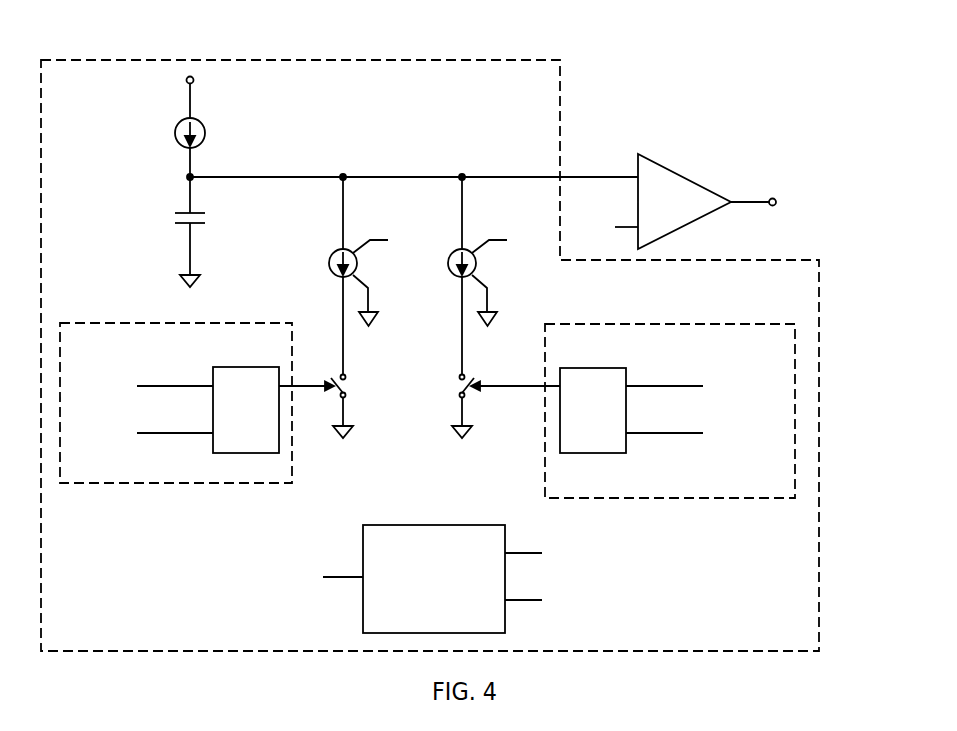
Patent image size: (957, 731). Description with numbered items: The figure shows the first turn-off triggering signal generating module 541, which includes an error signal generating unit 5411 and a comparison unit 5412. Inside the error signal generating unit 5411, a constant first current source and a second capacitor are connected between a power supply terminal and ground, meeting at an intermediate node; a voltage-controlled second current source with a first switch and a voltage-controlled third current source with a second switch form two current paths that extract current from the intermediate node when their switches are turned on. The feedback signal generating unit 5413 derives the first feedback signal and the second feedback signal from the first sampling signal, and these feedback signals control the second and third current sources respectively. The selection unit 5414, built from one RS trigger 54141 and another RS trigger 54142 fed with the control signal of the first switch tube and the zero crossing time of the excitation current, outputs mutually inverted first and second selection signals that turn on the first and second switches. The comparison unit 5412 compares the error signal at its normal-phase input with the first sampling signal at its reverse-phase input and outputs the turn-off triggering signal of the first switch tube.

The first turn-off triggering signal generating module 541 is at (728, 52).
The error signal generating unit 5411 is at (311, 60).
The comparison unit 5412 is at (691, 178).
The feedback signal generating unit 5413 is at (453, 623).
The selection unit 5414 is at (125, 323).
The RS trigger 54141 is at (249, 367).
The RS trigger 54142 is at (612, 368).